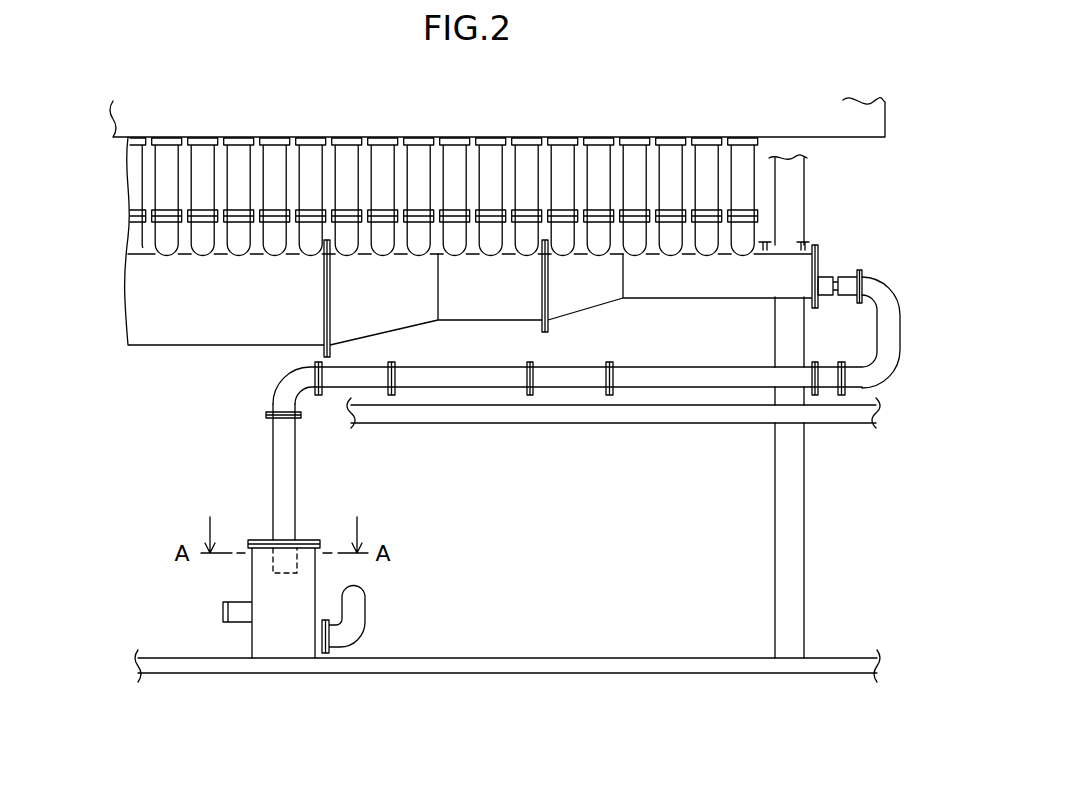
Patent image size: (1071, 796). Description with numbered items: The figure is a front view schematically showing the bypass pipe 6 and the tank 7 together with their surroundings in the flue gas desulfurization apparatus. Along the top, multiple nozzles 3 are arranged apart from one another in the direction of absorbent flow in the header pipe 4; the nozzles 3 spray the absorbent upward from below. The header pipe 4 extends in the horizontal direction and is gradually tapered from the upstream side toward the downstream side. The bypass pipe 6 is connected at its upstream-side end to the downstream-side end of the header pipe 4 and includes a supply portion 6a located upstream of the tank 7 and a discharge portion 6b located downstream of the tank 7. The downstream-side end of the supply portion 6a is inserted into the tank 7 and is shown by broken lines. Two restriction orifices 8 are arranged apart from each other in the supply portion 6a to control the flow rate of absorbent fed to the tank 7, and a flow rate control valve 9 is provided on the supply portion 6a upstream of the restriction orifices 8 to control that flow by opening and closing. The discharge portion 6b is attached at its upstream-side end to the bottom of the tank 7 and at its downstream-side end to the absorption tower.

The nozzles 3 is at (743, 155).
The header pipe 4 is at (200, 330).
The bypass pipe 6 is at (371, 528).
The supply portion 6a is at (283, 495).
The discharge portion 6b is at (378, 618).
The tank 7 is at (267, 638).
The restriction orifices 8 is at (533, 378).
The flow rate control valve 9 is at (826, 283).